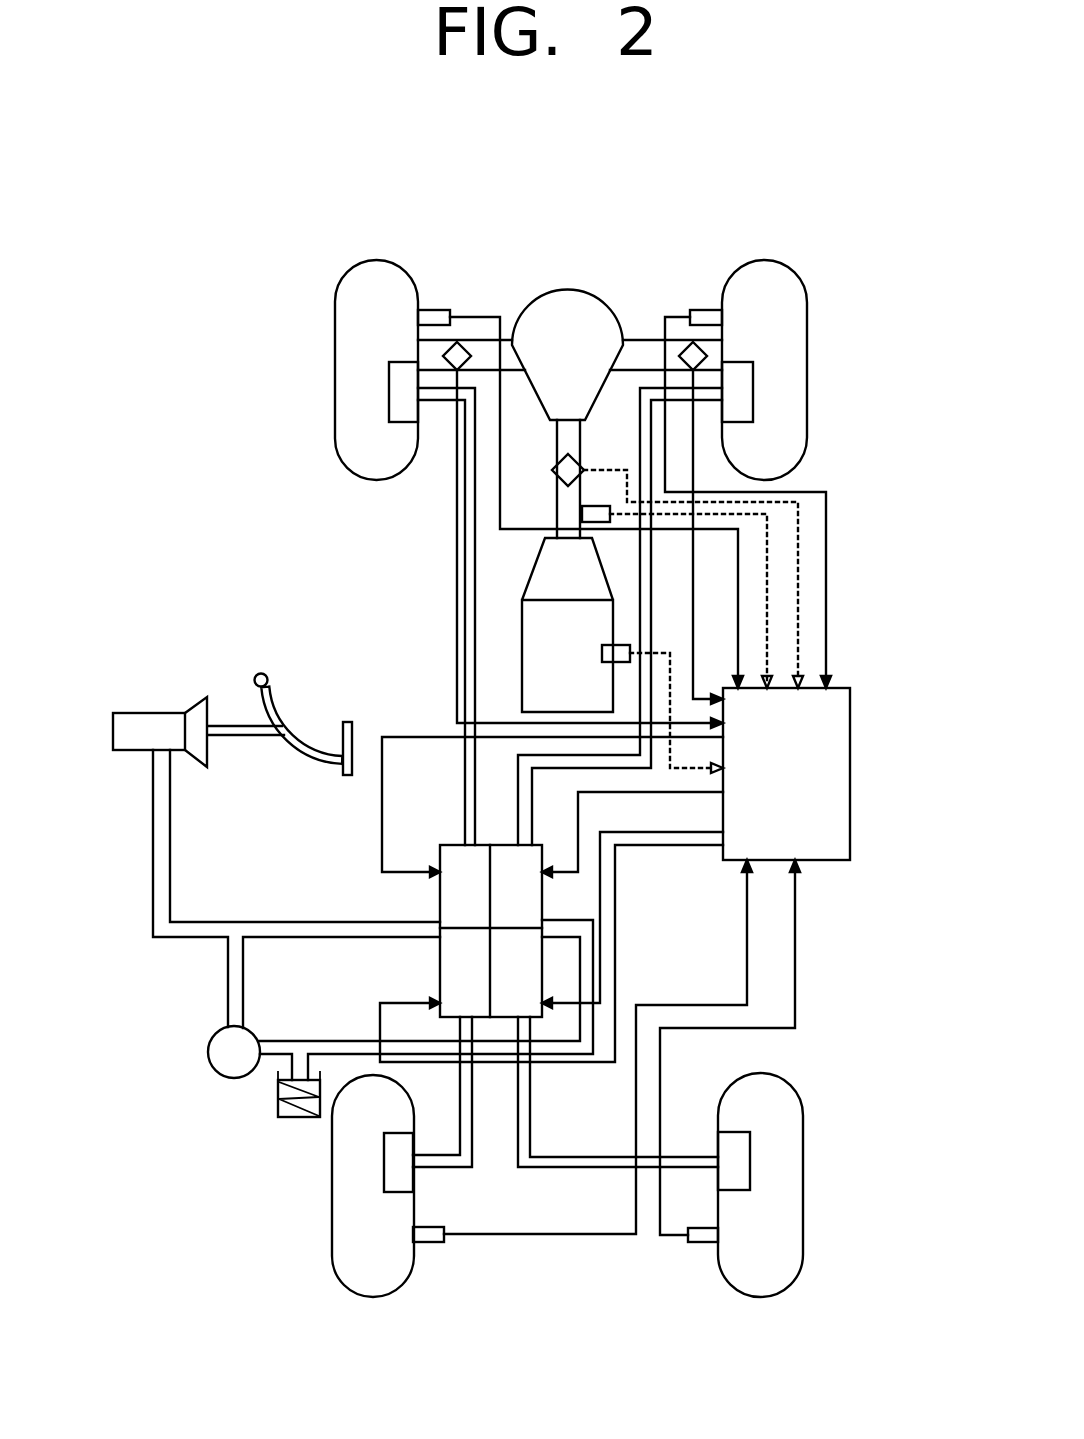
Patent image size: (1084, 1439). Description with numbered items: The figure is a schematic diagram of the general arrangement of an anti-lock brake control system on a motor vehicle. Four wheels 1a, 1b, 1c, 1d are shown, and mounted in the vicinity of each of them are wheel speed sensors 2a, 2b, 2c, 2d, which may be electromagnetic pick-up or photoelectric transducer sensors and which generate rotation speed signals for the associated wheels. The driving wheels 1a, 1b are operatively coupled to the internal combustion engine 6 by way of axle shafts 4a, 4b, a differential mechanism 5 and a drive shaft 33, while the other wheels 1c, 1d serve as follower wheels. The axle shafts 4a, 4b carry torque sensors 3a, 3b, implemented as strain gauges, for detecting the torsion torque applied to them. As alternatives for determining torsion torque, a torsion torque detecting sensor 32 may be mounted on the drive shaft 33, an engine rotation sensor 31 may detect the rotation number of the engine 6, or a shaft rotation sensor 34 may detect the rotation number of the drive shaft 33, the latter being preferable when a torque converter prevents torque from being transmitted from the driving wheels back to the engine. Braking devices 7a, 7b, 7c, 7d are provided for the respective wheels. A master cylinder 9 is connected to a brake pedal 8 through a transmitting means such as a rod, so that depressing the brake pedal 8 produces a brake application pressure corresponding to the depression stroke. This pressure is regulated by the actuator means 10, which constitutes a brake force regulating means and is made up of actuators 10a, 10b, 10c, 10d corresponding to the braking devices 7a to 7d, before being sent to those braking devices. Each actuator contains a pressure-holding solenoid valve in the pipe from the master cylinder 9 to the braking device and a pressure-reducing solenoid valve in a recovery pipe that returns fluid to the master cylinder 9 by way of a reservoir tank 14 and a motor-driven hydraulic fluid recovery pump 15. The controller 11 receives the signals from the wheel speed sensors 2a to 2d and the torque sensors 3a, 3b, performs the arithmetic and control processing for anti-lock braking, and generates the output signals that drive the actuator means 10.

The driving wheel 1a is at (335, 320).
The driving wheel 1b is at (807, 340).
The follower wheel 1c is at (333, 1262).
The follower wheel 1d is at (803, 1258).
The wheel speed sensor 2a is at (437, 308).
The wheel speed sensor 2b is at (720, 308).
The wheel speed sensor 2c is at (437, 1243).
The wheel speed sensor 2d is at (692, 1243).
The torque sensor 3a is at (470, 338).
The torque sensor 3b is at (685, 340).
The axle shaft 4a is at (503, 335).
The axle shaft 4b is at (642, 335).
The differential mechanism 5 is at (577, 290).
The internal combustion engine 6 is at (522, 646).
The braking device 7a is at (389, 405).
The braking device 7b is at (753, 403).
The braking device 7c is at (384, 1163).
The braking device 7d is at (750, 1175).
The brake pedal 8 is at (299, 722).
The master cylinder 9 is at (158, 712).
The actuator means 10 is at (505, 898).
The actuator 10a is at (457, 862).
The actuator 10b is at (528, 902).
The actuator 10c is at (452, 972).
The actuator 10d is at (528, 972).
The controller 11 is at (852, 758).
The reservoir tank 14 is at (272, 1114).
The hydraulic fluid recovery pump 15 is at (208, 1066).
The engine rotation sensor 31 is at (632, 645).
The torsion torque detecting sensor 32 is at (548, 493).
The drive shaft 33 is at (556, 517).
The shaft rotation sensor 34 is at (608, 532).